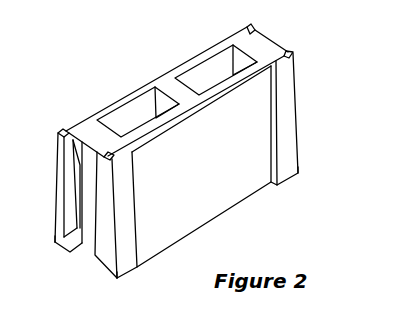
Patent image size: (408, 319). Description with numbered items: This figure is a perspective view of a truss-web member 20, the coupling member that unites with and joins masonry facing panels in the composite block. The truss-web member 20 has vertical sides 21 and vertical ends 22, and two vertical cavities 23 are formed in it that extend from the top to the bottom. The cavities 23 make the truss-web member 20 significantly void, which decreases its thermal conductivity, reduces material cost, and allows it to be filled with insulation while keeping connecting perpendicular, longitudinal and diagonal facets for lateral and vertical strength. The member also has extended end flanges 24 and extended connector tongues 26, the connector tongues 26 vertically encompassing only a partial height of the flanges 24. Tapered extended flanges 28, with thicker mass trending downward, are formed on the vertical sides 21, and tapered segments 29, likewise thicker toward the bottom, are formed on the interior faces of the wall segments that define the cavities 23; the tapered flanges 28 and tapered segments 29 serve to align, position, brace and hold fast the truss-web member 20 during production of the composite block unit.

The truss-web member 20 is at (124, 53).
The vertical side 21 is at (171, 65).
The vertical end 22 is at (259, 50).
The vertical cavity 23 is at (210, 77).
The extended end flange 24 is at (240, 26).
The extended connector tongue 26 is at (100, 238).
The tapered extended flange 28 is at (63, 227).
The tapered segment 29 is at (232, 75).